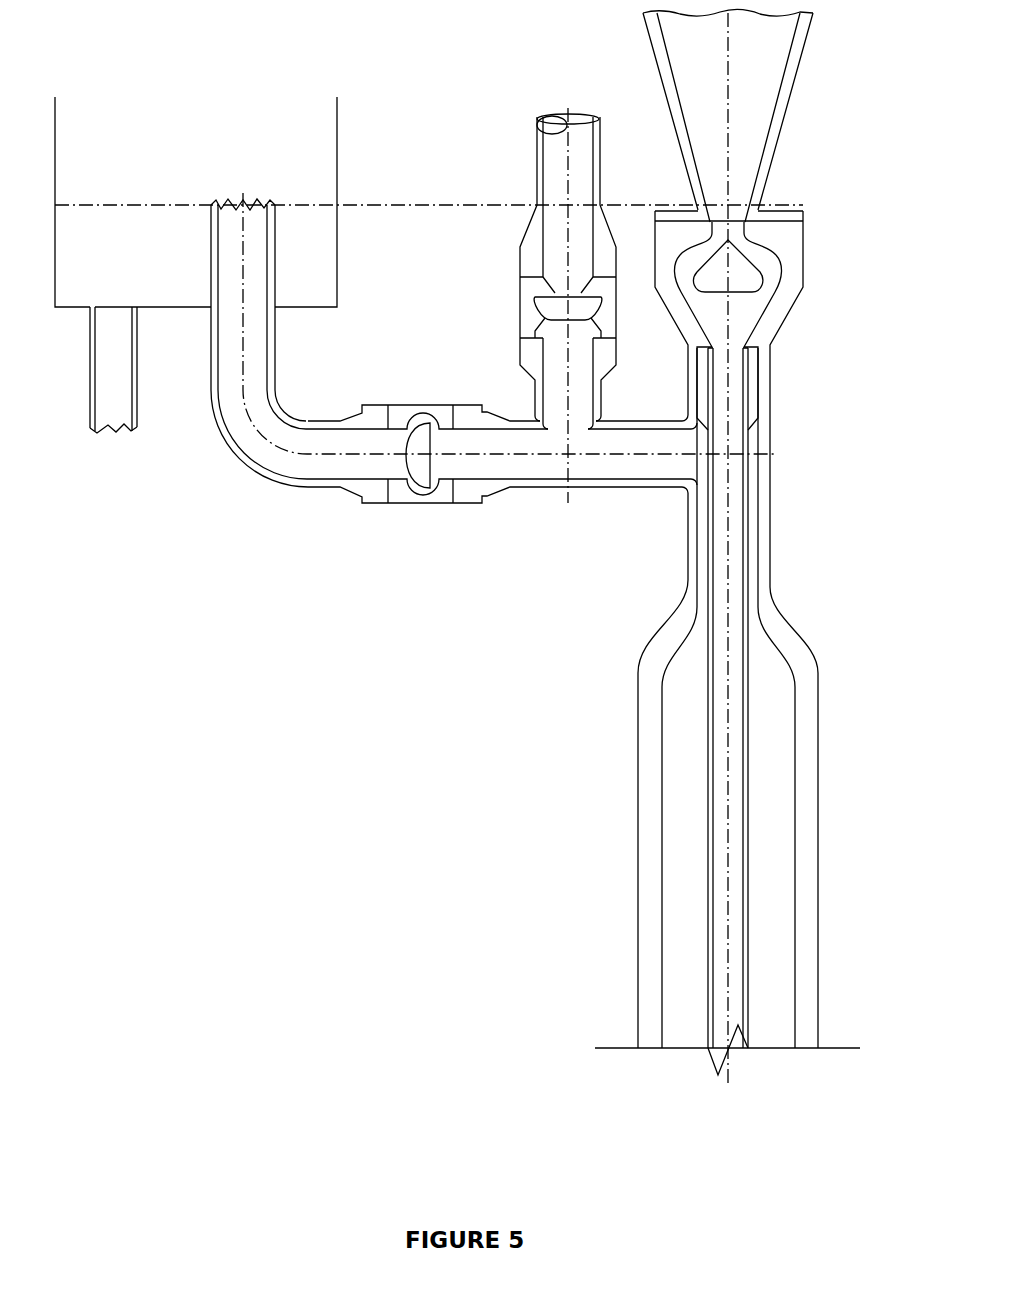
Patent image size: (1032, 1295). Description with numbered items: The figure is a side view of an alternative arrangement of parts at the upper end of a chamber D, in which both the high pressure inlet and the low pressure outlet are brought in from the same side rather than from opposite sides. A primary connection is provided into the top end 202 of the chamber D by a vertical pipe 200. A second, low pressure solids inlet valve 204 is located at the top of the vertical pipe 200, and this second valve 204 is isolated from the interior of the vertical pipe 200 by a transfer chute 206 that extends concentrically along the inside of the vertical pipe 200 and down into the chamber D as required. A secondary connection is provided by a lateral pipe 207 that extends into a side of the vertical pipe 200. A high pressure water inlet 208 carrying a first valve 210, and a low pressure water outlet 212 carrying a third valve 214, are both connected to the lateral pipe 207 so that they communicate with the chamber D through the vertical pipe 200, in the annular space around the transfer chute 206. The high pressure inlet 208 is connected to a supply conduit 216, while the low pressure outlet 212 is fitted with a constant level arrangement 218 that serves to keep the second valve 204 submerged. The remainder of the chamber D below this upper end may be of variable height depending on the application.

The vertical pipe 200 is at (765, 503).
The top end 202 is at (800, 604).
The second, low pressure solids inlet valve 204 is at (747, 260).
The transfer chute 206 is at (748, 762).
The lateral pipe 207 is at (632, 483).
The high pressure water inlet 208 is at (557, 385).
The first valve 210 is at (557, 310).
The low pressure water outlet 212 is at (500, 463).
The third valve 214 is at (415, 463).
The supply conduit 216 is at (557, 157).
The constant level arrangement 218 is at (225, 205).
The chamber D is at (827, 847).